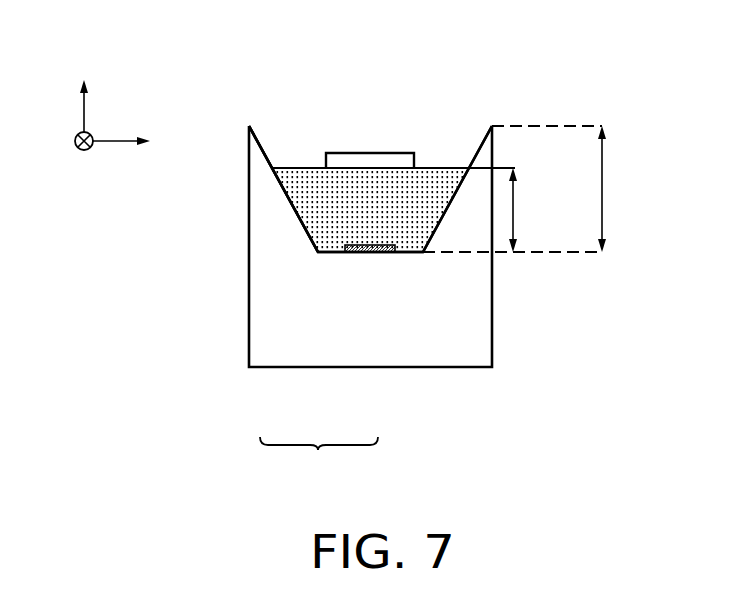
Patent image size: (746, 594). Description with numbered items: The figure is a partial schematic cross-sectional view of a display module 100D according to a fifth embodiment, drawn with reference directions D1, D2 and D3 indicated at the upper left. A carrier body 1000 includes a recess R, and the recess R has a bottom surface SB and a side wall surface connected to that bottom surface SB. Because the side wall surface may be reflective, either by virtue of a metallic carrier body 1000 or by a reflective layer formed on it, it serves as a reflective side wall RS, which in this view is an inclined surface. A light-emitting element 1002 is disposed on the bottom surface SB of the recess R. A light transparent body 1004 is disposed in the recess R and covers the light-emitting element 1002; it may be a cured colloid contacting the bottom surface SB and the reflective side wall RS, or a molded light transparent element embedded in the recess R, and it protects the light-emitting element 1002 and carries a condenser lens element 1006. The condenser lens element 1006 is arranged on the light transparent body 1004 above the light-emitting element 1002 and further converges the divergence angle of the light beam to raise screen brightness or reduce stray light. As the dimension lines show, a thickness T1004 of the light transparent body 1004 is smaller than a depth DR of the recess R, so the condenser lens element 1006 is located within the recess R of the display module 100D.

The carrier body 1000 is at (478, 322).
The light-emitting element 1002 is at (352, 242).
The light transparent body 1004 is at (433, 182).
The condenser lens element 1006 is at (372, 160).
The display module 100D is at (615, 487).
The bottom surface SB is at (332, 266).
The reflective side wall RS is at (297, 238).
The recess R is at (319, 463).
The thickness of the light transparent body T1004 is at (548, 210).
The depth of the recess DR is at (528, 189).
The first direction D1 is at (135, 146).
The second direction D2 is at (87, 164).
The third direction D3 is at (86, 87).